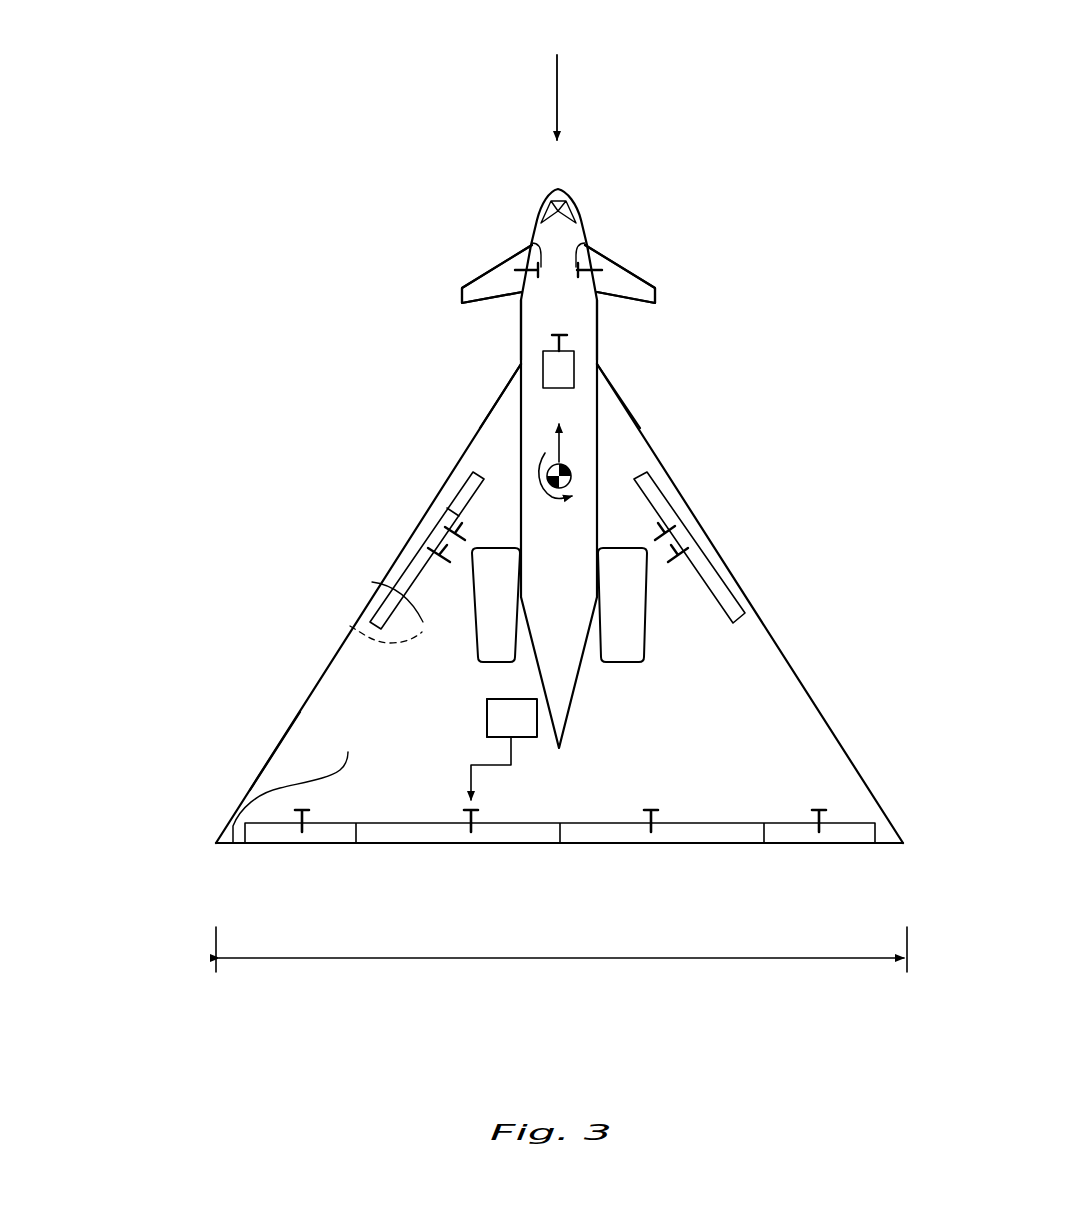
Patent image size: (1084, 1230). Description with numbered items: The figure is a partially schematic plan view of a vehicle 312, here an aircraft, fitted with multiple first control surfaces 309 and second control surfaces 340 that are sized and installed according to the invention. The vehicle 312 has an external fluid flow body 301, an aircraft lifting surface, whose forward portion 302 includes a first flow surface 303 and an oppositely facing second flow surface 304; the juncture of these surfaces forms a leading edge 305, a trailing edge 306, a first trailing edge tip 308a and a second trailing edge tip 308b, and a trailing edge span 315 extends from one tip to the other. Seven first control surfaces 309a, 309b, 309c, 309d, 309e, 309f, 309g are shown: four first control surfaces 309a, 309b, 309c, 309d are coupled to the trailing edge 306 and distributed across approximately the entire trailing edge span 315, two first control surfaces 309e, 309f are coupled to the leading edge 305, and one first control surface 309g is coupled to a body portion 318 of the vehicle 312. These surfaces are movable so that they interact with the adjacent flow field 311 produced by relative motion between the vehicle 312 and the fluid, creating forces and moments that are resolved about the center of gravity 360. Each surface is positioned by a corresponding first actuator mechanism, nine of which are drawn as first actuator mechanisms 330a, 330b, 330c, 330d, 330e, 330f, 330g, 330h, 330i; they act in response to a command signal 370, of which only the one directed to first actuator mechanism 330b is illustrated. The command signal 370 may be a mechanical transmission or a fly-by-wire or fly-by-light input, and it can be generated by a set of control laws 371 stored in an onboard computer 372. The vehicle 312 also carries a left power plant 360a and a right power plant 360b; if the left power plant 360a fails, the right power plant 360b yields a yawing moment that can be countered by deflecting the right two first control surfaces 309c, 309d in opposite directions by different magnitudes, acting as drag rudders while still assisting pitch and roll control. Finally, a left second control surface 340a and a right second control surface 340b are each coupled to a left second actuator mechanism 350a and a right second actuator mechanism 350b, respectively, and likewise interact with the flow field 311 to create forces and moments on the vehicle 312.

The external fluid flow body 301 is at (233, 767).
The forward portion 302 is at (302, 744).
The first flow surface 303 is at (372, 582).
The second flow surface 304 is at (350, 626).
The leading edge 305 is at (500, 403).
The trailing edge 306 is at (350, 822).
The first trailing edge tip 308a is at (216, 843).
The second trailing edge tip 308b is at (903, 843).
The first control surfaces 309 is at (562, 900).
The first control surface 309a is at (330, 837).
The first control surface 309b is at (488, 837).
The first control surface 309c is at (667, 837).
The first control surface 309d is at (843, 837).
The first control surface 309e is at (467, 490).
The first control surface 309f is at (728, 582).
The first control surface 309g is at (568, 375).
The flow field 311 is at (556, 78).
The vehicle 312 is at (192, 397).
The trailing edge span 315 is at (560, 960).
The body portion 318 is at (598, 330).
The first actuator mechanism 330a is at (297, 808).
The first actuator mechanism 330b is at (467, 808).
The first actuator mechanism 330c is at (648, 808).
The first actuator mechanism 330d is at (817, 808).
The first actuator mechanism 330e is at (440, 572).
The first actuator mechanism 330f is at (658, 533).
The first actuator mechanism 330g is at (557, 336).
The first actuator mechanism 330h is at (462, 538).
The first actuator mechanism 330i is at (680, 570).
The second control surfaces 340 is at (710, 220).
The left second control surface 340a is at (487, 270).
The right second control surface 340b is at (625, 268).
The left second actuator mechanism 350a is at (532, 242).
The right second actuator mechanism 350b is at (586, 242).
The center of gravity 360 is at (565, 470).
The left power plant 360a is at (472, 640).
The right power plant 360b is at (648, 640).
The command signal 370 is at (487, 766).
The control laws 371 is at (508, 717).
The onboard computer 372 is at (487, 730).